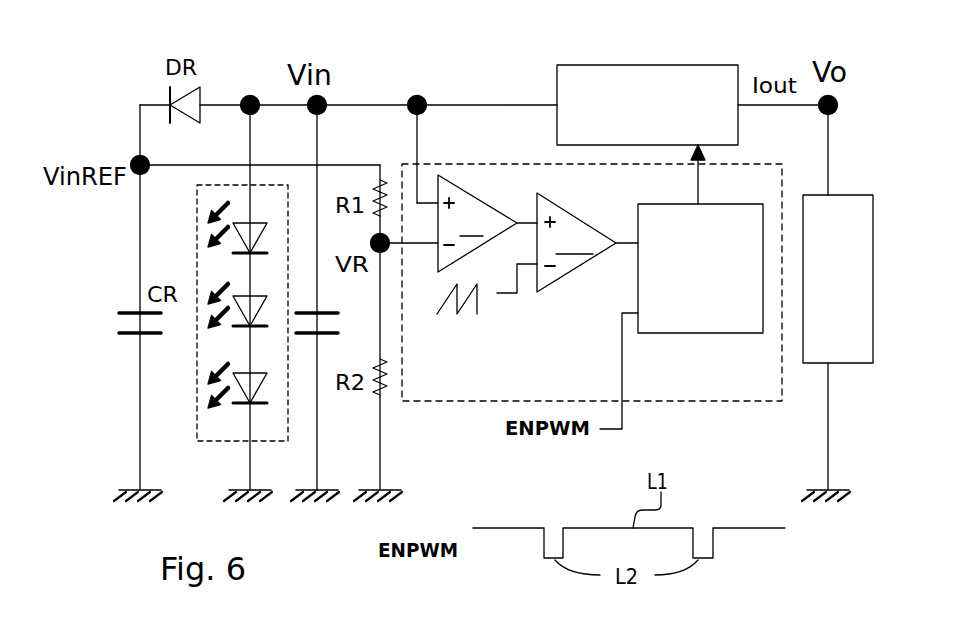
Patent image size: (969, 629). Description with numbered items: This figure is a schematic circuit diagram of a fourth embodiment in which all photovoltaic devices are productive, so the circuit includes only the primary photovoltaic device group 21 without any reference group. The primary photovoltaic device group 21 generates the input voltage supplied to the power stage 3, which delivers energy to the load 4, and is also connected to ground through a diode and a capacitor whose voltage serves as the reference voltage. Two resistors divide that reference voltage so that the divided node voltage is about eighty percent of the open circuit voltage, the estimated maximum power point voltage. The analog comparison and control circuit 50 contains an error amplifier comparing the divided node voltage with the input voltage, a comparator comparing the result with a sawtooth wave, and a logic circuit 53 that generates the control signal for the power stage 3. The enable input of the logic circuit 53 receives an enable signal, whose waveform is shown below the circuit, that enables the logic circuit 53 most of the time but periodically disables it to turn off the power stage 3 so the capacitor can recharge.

The power stage 3 is at (708, 65).
The load 4 is at (845, 363).
The primary photovoltaic device group 21 is at (242, 185).
The analog comparison and control circuit 50 is at (665, 401).
The logic circuit 53 is at (706, 333).